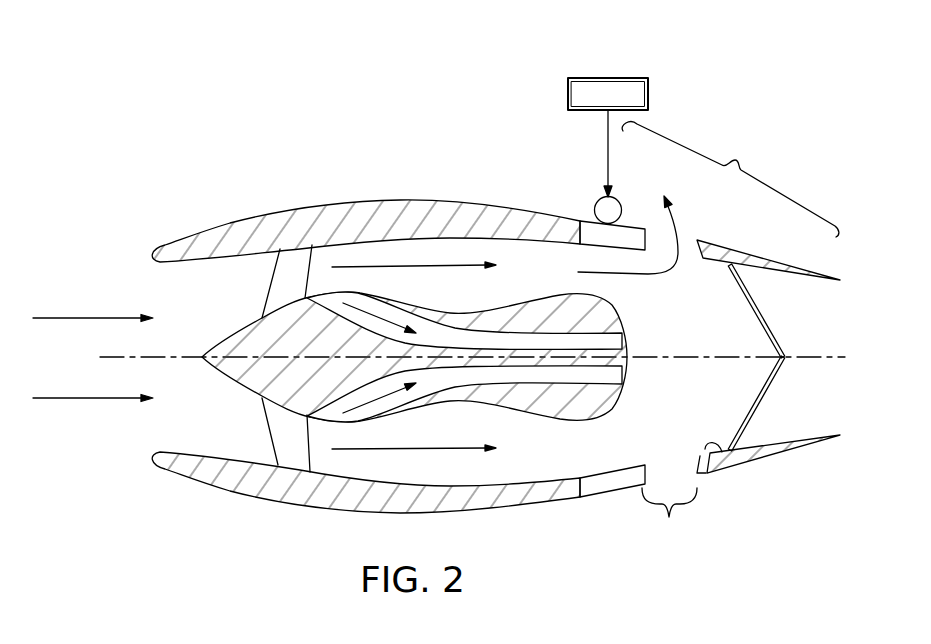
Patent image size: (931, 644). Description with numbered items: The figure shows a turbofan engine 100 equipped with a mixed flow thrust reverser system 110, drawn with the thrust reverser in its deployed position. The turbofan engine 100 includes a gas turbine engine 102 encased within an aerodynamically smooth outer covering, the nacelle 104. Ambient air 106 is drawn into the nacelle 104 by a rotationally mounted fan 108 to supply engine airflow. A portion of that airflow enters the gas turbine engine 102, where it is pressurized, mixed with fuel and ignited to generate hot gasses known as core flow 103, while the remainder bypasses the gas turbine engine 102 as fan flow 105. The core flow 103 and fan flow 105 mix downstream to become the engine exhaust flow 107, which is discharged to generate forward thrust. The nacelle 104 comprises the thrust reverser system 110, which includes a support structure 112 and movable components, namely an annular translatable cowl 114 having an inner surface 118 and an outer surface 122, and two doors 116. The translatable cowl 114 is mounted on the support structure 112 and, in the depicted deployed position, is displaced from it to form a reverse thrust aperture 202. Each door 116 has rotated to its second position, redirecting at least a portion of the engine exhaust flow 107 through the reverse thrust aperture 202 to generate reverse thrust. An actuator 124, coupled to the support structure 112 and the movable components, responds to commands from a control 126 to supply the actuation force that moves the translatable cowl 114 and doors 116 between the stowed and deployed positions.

The turbofan engine 100 is at (477, 149).
The gas turbine engine 102 is at (529, 299).
The core flow 103 is at (392, 318).
The nacelle 104 is at (322, 202).
The fan flow 105 is at (424, 265).
The ambient air 106 is at (100, 316).
The engine exhaust flow 107 is at (672, 278).
The fan 108 is at (295, 253).
The mixed flow thrust reverser system 110 is at (730, 179).
The support structure 112 is at (584, 222).
The translatable cowl 114 is at (786, 254).
The doors 116 is at (760, 309).
The inner surface 118 is at (718, 473).
The outer surface 122 is at (788, 452).
The actuator 124 is at (622, 204).
The control 126 is at (612, 77).
The reverse thrust aperture 202 is at (669, 518).